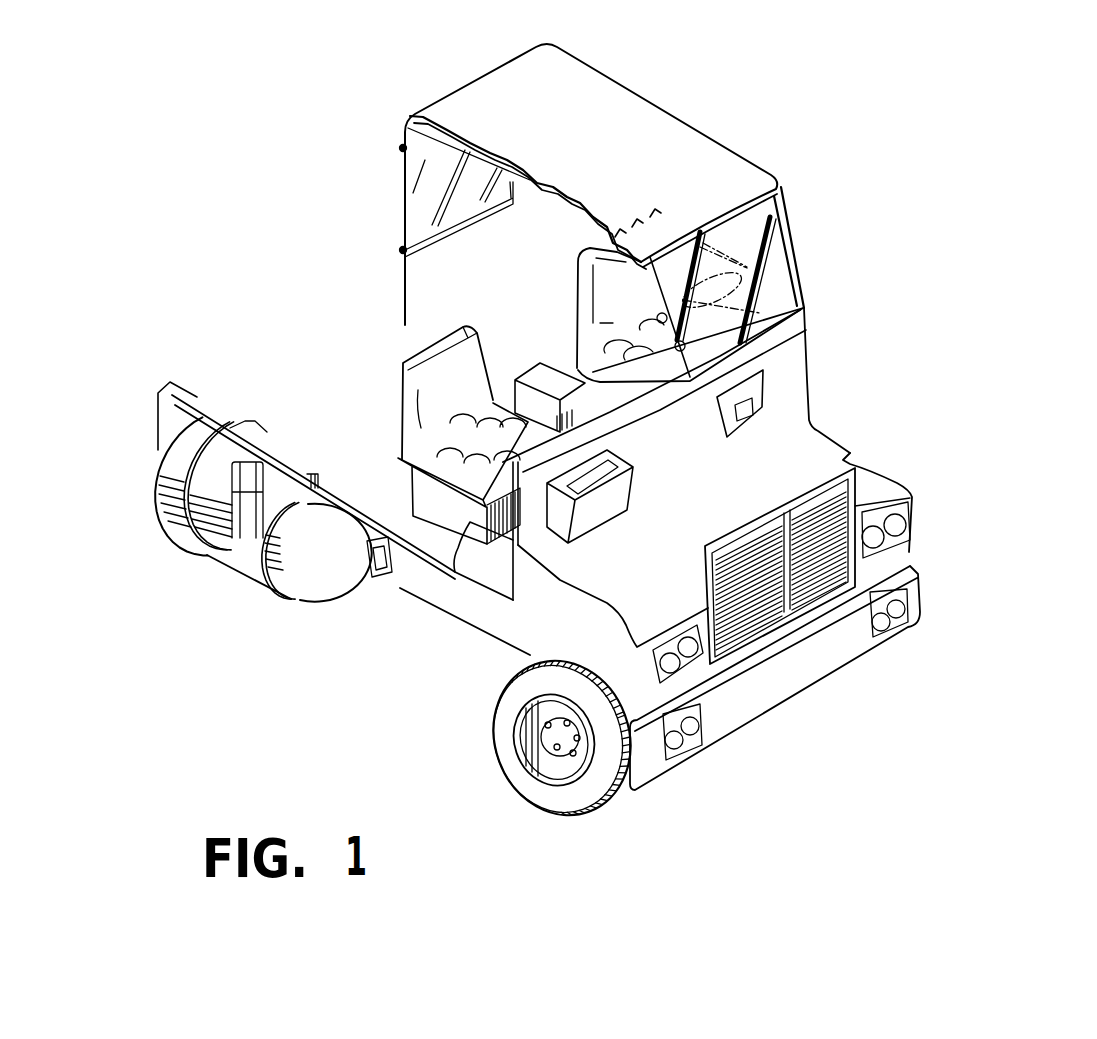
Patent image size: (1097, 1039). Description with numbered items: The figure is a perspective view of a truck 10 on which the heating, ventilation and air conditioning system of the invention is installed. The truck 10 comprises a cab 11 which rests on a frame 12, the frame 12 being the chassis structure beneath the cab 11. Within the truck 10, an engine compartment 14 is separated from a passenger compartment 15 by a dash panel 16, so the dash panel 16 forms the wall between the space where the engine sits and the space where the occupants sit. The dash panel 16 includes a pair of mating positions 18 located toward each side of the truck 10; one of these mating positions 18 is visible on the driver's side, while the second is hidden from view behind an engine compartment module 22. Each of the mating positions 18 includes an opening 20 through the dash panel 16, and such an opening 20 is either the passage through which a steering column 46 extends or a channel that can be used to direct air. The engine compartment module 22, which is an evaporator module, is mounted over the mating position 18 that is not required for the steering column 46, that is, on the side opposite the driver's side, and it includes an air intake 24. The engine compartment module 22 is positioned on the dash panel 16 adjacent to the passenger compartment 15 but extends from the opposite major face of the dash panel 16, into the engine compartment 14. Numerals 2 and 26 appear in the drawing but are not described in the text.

The cab 2 is at (634, 298).
The truck 10 is at (307, 622).
The cab 11 is at (688, 118).
The frame 12 is at (179, 427).
The engine compartment 14 is at (732, 511).
The passenger compartment 15 is at (538, 298).
The dash panel 16 is at (788, 398).
The mating positions 18 is at (762, 403).
The openings 20 is at (767, 414).
The engine compartment module 22 is at (605, 498).
The air intake 24 is at (612, 454).
The floor step 26 is at (523, 530).
The steering column 46 is at (760, 315).